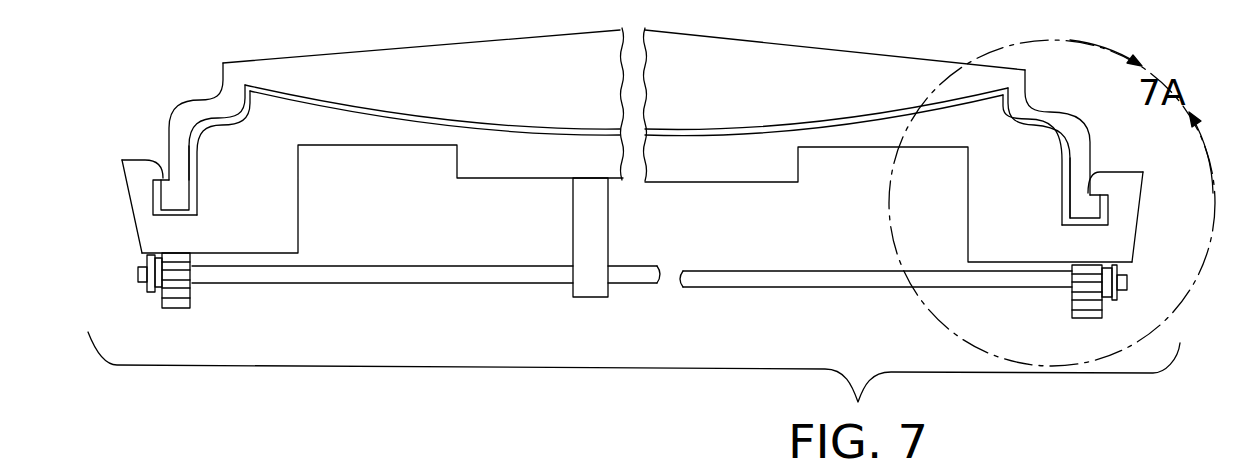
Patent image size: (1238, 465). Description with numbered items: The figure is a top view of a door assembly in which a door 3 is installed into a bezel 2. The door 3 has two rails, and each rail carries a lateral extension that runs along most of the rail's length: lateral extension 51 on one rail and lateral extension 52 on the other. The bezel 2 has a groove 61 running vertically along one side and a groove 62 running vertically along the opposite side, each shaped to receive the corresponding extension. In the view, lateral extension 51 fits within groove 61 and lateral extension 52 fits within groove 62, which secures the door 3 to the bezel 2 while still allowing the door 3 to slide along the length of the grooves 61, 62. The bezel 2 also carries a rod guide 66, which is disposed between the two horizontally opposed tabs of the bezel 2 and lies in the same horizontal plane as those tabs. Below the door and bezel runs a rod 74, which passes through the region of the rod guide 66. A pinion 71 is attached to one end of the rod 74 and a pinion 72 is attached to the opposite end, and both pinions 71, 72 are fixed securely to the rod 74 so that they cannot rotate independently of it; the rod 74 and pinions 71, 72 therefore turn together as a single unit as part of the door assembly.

The bezel 2 is at (512, 162).
The door 3 is at (286, 56).
The lateral extension 51 is at (1090, 215).
The lateral extension 52 is at (170, 214).
The groove 61 is at (1113, 202).
The groove 62 is at (176, 212).
The rod guide 66 is at (608, 238).
The pinion 71 is at (1072, 308).
The pinion 72 is at (192, 295).
The rod 74 is at (468, 285).